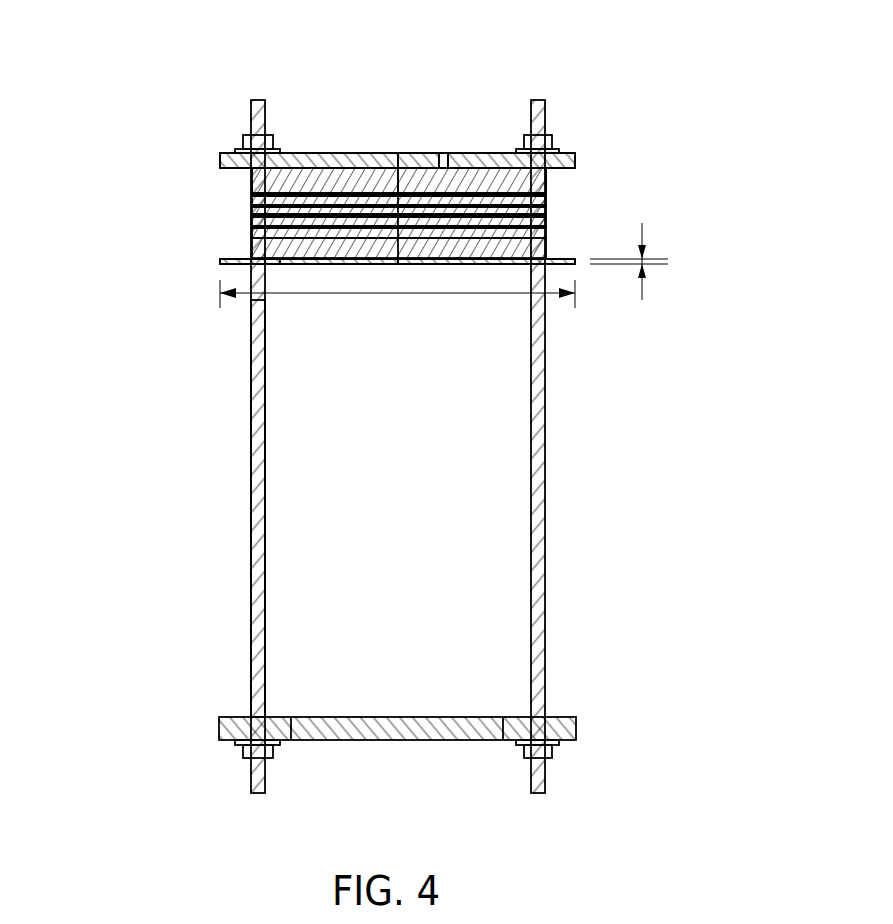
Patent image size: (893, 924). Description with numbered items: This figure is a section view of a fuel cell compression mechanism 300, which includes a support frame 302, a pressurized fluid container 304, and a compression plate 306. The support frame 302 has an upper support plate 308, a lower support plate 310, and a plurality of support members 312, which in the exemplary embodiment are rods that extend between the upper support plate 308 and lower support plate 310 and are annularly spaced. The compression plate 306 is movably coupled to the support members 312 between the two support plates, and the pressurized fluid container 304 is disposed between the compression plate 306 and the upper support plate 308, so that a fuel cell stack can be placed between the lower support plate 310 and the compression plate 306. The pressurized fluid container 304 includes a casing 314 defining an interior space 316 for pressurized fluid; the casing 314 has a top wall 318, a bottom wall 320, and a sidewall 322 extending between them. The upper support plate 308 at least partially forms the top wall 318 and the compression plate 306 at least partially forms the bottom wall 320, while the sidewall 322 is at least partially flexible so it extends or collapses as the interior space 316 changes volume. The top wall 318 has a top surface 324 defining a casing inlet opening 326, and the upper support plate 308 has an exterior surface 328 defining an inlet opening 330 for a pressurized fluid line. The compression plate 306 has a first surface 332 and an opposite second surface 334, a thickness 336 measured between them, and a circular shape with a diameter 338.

The fuel cell compression mechanism 300 is at (162, 63).
The support frame 302 is at (253, 648).
The pressurized fluid container 304 is at (305, 266).
The compression plate 306 is at (488, 266).
The upper support plate 308 is at (466, 160).
The lower support plate 310 is at (565, 727).
The support members 312 is at (253, 433).
The casing 314 is at (547, 185).
The interior space 316 is at (262, 188).
The top wall 318 is at (315, 153).
The bottom wall 320 is at (381, 266).
The sidewall 322 is at (547, 235).
The top surface 324 is at (292, 156).
The casing inlet opening 326 is at (440, 153).
The exterior surface 328 is at (505, 153).
The inlet opening 330 is at (443, 153).
The first surface 332 is at (233, 258).
The second surface 334 is at (227, 266).
The thickness 336 is at (645, 289).
The diameter 338 is at (440, 297).